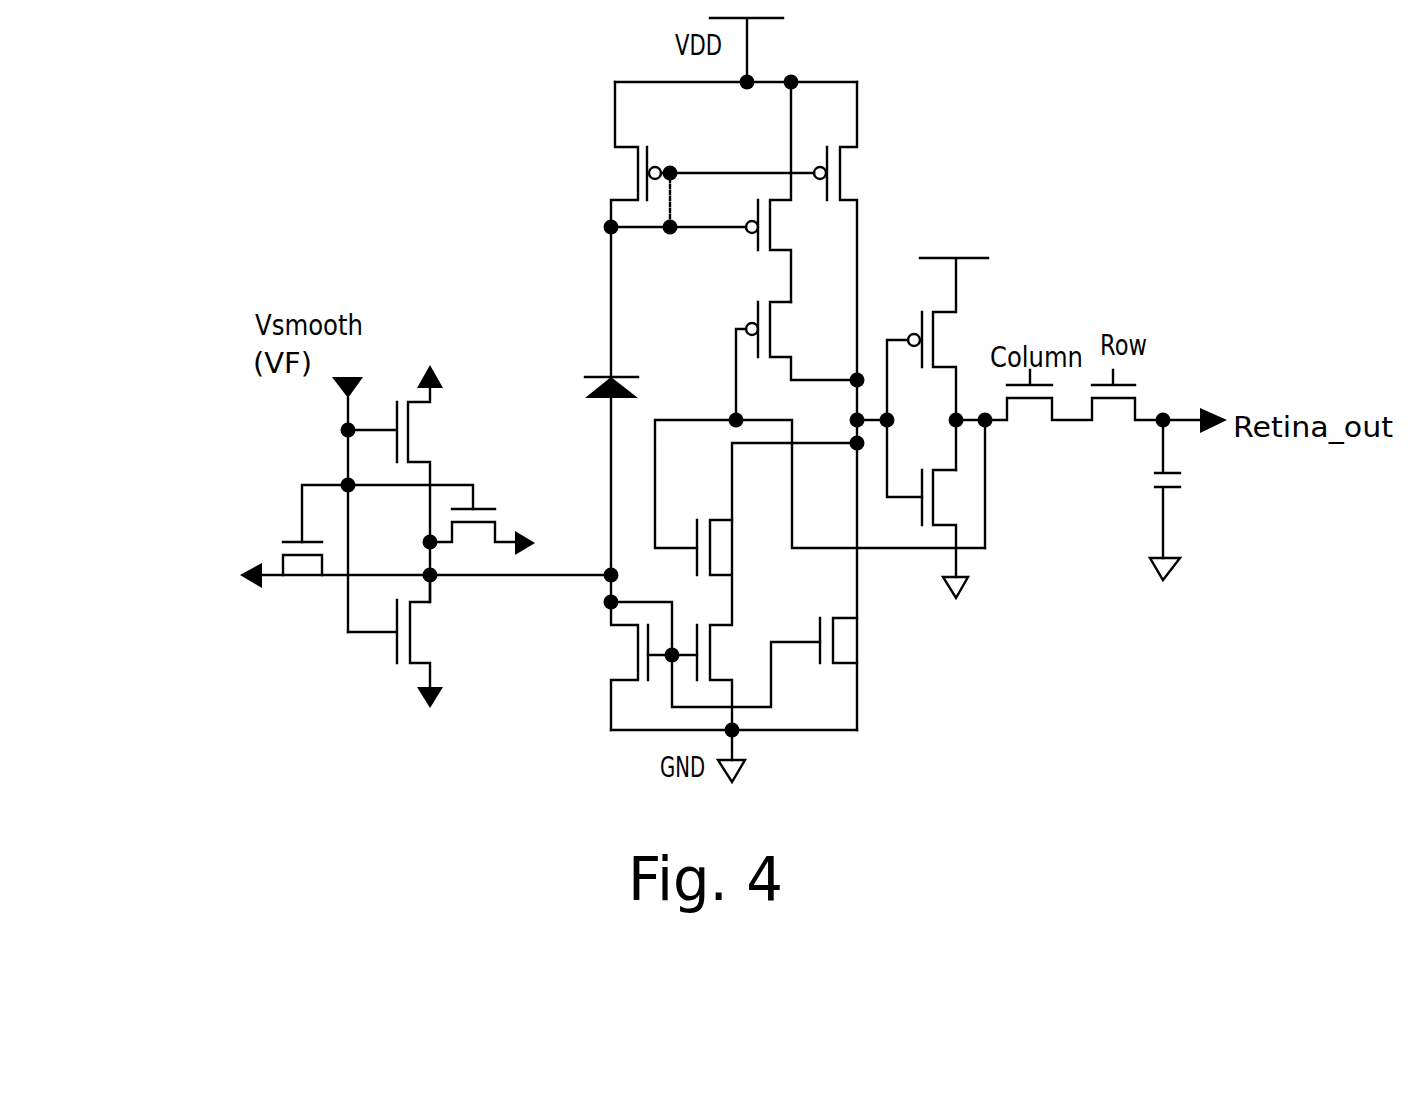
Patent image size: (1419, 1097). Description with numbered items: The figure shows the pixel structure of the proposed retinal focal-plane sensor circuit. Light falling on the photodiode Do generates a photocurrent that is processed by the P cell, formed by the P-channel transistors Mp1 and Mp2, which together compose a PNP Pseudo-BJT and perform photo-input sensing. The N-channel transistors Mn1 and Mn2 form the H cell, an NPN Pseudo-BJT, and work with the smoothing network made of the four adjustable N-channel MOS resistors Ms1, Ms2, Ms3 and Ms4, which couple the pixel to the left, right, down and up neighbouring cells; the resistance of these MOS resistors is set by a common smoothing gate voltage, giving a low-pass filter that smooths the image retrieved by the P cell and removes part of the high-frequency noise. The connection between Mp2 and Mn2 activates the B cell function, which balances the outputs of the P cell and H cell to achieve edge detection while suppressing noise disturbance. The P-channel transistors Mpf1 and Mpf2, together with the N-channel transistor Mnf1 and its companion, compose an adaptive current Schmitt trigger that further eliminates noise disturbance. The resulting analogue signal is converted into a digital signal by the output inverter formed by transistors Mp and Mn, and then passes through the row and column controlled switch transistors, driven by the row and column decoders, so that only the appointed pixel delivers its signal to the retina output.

The P-channel transistor Mp1 is at (693, 154).
The P-channel transistor Mp2 is at (858, 406).
The P-channel feedback transistor Mpf1 is at (794, 192).
The P-channel feedback transistor Mpf2 is at (797, 365).
The photodiode Do is at (591, 418).
The inverter P-channel transistor Mp is at (961, 364).
The inverter N-channel transistor Mn is at (972, 541).
The N-channel transistor Mn1 is at (615, 666).
The N-channel feedback transistor Mnf1 is at (739, 625).
The N-channel transistor Mn2 is at (860, 641).
The adjustable N-channel MOS resistor Ms1 is at (237, 580).
The adjustable N-channel MOS resistor Ms2 is at (520, 521).
The adjustable N-channel MOS resistor Ms3 is at (423, 678).
The adjustable N-channel MOS resistor Ms4 is at (416, 446).